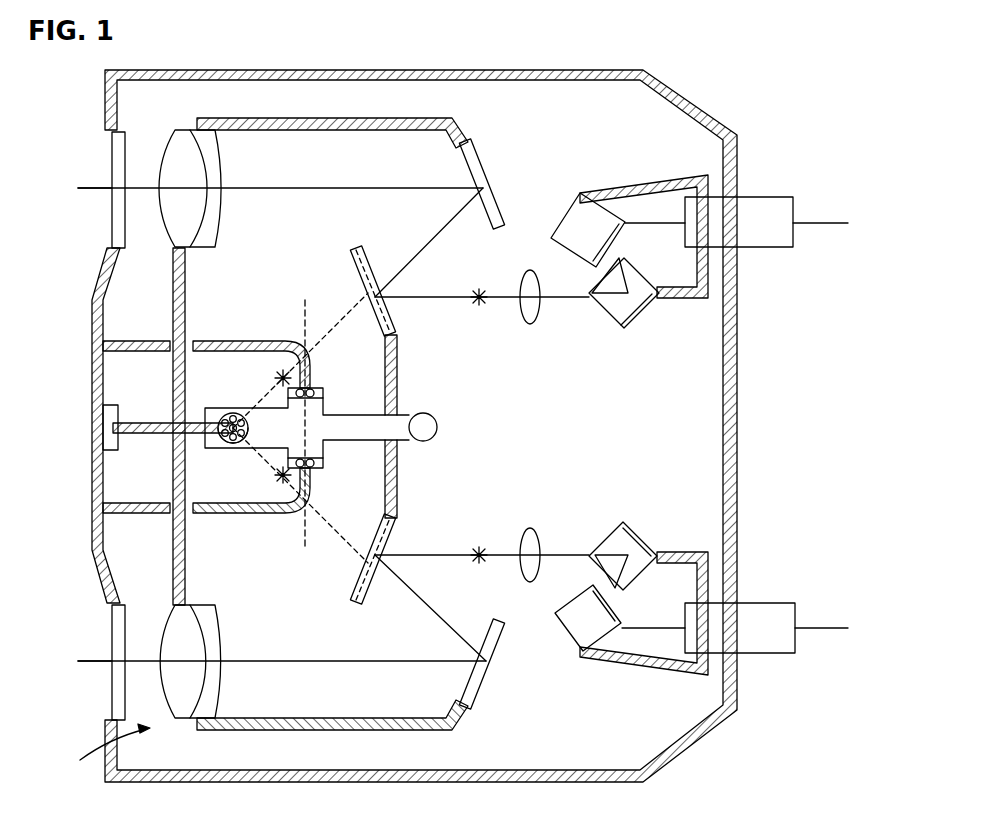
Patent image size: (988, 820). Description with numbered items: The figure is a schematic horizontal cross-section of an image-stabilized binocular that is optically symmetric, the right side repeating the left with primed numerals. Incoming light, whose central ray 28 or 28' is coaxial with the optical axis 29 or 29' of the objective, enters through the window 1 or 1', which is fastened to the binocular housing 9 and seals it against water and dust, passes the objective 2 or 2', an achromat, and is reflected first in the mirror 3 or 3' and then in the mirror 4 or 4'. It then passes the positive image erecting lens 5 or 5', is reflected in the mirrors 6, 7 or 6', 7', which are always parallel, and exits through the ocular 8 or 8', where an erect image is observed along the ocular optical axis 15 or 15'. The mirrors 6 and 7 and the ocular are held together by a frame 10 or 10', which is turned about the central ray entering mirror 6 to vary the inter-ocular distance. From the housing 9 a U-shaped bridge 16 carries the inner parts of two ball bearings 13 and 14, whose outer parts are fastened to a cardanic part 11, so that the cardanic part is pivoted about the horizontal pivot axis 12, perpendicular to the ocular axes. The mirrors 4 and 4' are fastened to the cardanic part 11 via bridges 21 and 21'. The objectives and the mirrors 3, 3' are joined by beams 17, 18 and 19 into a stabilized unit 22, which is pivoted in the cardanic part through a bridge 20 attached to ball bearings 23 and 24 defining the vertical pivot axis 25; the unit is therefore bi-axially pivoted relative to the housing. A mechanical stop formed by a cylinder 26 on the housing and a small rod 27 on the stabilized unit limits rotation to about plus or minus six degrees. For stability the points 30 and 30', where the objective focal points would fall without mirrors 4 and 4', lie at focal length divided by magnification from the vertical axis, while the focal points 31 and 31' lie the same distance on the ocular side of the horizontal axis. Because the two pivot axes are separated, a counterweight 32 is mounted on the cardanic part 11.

The window 1 is at (96, 663).
The window 1' is at (92, 190).
The objective 2 is at (190, 685).
The objective 2' is at (190, 166).
The mirror 3 is at (490, 664).
The mirror 3' is at (490, 178).
The mirror 4 is at (355, 564).
The mirror 4' is at (349, 291).
The image erecting lens 5 is at (536, 533).
The image erecting lens 5' is at (538, 313).
The mirror 6 is at (623, 540).
The mirror 6' is at (624, 317).
The mirror 7 is at (580, 630).
The mirror 7' is at (587, 211).
The ocular 8 is at (766, 653).
The ocular 8' is at (766, 249).
The binocular housing 9 is at (385, 70).
The frame 10 is at (648, 602).
The frame 10' is at (644, 263).
The cardanic part 11 is at (390, 420).
The horizontal pivot axis 12 is at (312, 308).
The ball bearing 13 is at (323, 390).
The ball bearing 14 is at (323, 468).
The optical axis of the ocular 15 is at (653, 641).
The optical axis of the ocular 15' is at (655, 248).
The U-shaped bridge 16 is at (155, 341).
The beam 17 is at (173, 400).
The beam 18 is at (355, 118).
The beam 19 is at (375, 718).
The bridge 20 is at (205, 420).
The bridge 21 is at (419, 479).
The bridge 21' is at (427, 375).
The stabilized unit 22 is at (97, 752).
The ball bearing 23 is at (235, 414).
The ball bearing 24 is at (233, 428).
The vertical pivot axis 25 is at (240, 442).
The cylinder 26 is at (103, 410).
The small rod 27 is at (140, 433).
The central ray 28 is at (82, 641).
The central ray 28' is at (80, 209).
The optical axis of the objective 29 is at (282, 643).
The optical axis of the objective 29' is at (280, 207).
The point 30 is at (300, 495).
The point 30' is at (300, 356).
The focal point of the objective 31 is at (469, 532).
The focal point of the objective 31' is at (480, 317).
The counterweight 32 is at (437, 418).